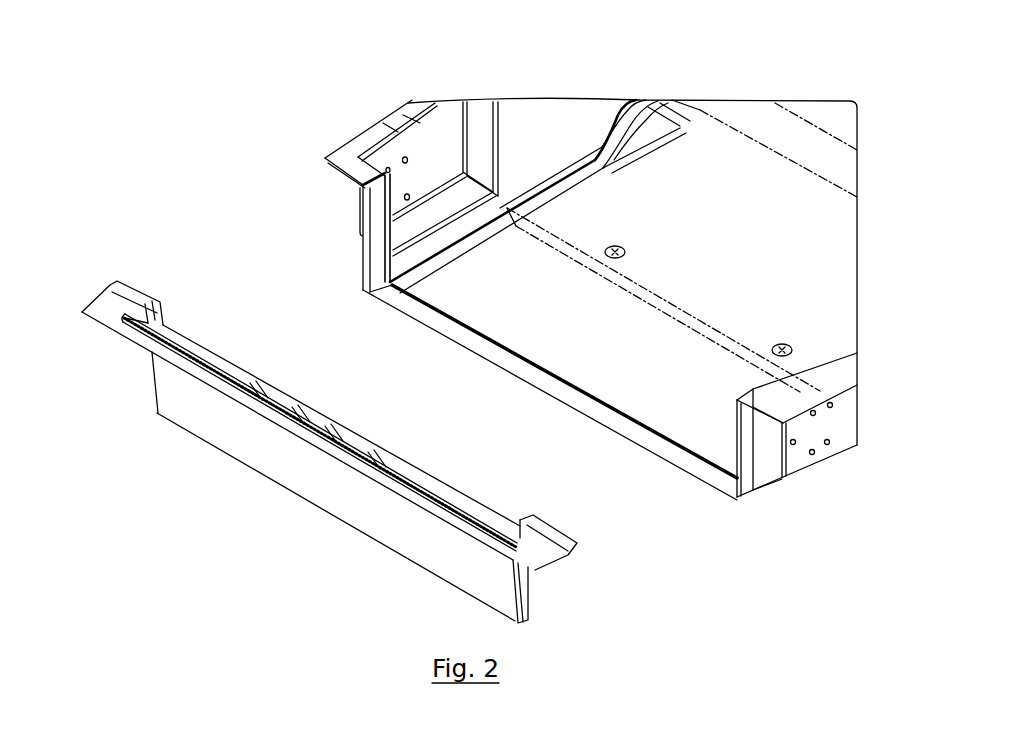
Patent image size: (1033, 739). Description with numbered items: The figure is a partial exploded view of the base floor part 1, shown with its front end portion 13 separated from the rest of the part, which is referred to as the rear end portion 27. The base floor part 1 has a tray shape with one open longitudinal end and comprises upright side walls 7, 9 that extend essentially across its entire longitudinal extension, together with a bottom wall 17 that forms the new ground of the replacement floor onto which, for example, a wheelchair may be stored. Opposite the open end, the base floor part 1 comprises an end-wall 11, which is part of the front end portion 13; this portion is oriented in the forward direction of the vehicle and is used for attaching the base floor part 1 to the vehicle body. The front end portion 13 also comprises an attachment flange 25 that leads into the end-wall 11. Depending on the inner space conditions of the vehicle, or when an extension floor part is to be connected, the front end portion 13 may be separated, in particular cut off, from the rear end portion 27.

The base floor part 1 is at (457, 280).
The upright side wall 7 is at (840, 421).
The upright side wall 9 is at (556, 128).
The end-wall 11 is at (249, 451).
The front end portion 13 is at (311, 395).
The bottom wall 17 is at (740, 258).
The attachment flange 25 is at (104, 307).
The rear end portion 27 is at (338, 118).